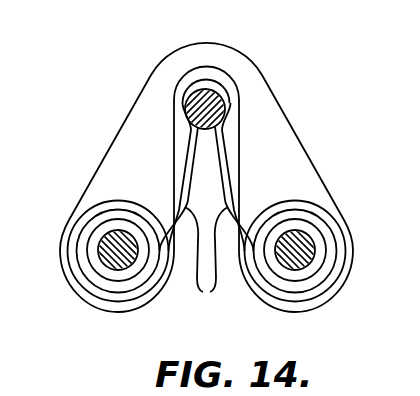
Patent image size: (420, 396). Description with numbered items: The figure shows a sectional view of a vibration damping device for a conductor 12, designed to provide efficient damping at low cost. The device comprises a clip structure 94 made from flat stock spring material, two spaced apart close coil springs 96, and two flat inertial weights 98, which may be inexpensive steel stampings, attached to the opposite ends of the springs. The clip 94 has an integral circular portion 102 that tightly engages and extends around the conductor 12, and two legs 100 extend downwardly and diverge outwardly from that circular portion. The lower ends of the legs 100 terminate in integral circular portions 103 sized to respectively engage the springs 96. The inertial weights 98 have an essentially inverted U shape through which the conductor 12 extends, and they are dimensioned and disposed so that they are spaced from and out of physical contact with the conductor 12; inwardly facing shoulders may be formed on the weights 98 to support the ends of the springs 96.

The conductor 12 is at (192, 99).
The clip structure 94 is at (247, 204).
The close coil springs 96 is at (102, 285).
The flat inertial weights 98 is at (140, 115).
The legs 100 is at (203, 262).
The integral circular portion 102 is at (213, 88).
The integral circular portions 103 is at (83, 213).